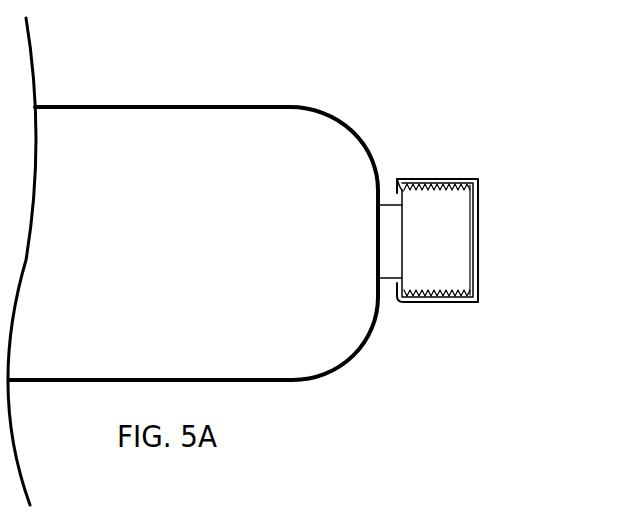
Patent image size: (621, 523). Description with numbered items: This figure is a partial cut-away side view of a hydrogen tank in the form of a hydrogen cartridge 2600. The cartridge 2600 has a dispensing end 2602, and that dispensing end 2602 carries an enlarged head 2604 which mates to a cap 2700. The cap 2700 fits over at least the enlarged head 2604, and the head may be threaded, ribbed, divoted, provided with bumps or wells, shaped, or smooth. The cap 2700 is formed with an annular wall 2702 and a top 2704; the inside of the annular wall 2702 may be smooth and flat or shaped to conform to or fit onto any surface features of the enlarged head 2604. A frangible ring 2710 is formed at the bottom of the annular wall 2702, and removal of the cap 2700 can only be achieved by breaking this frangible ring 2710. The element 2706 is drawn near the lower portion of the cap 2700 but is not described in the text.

The hydrogen cartridge 2600 is at (193, 261).
The dispensing end 2602 is at (390, 264).
The enlarged head 2604 is at (428, 255).
The cap 2700 is at (489, 179).
The annular wall 2702 is at (429, 178).
The top 2704 is at (478, 211).
The bottom thread band 2706 is at (408, 309).
The frangible ring 2710 is at (397, 192).